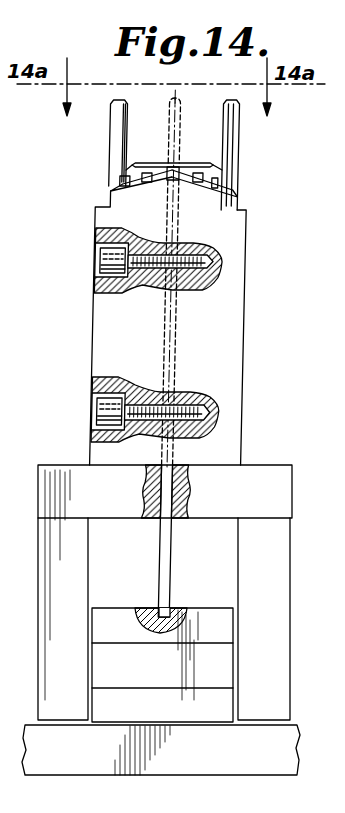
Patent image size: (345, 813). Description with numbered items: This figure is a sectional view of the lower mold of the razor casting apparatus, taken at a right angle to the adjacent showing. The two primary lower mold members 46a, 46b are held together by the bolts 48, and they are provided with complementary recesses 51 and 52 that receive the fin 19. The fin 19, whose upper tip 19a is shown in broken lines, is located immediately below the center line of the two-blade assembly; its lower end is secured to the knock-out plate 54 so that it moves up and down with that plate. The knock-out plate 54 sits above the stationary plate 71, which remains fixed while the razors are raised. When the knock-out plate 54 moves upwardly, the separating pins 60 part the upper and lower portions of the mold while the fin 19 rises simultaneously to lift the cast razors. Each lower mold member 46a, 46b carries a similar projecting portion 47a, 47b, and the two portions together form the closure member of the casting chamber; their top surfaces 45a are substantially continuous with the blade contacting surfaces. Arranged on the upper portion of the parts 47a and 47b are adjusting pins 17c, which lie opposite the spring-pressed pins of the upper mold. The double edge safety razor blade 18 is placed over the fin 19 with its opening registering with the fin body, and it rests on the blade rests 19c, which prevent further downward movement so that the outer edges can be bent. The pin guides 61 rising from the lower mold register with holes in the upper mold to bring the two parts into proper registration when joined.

The adjusting pins 17c is at (128, 168).
The double edge safety razor blade 18 is at (143, 163).
The fin 19 is at (174, 142).
The pin tip 19a is at (172, 98).
The blade rests 19c is at (171, 168).
The top surfaces 45a is at (114, 185).
The lower mold member 46a is at (91, 337).
The lower mold member 46b is at (242, 355).
The projecting portion 47a is at (148, 190).
The projecting portion 47b is at (199, 188).
The bolts 48 is at (94, 260).
The recess 51 is at (161, 330).
The recess 52 is at (179, 335).
The knock-out plate 54 is at (218, 668).
The separating pins 60 is at (176, 522).
The pin guides 61 is at (109, 125).
The stationary plate 71 is at (270, 752).